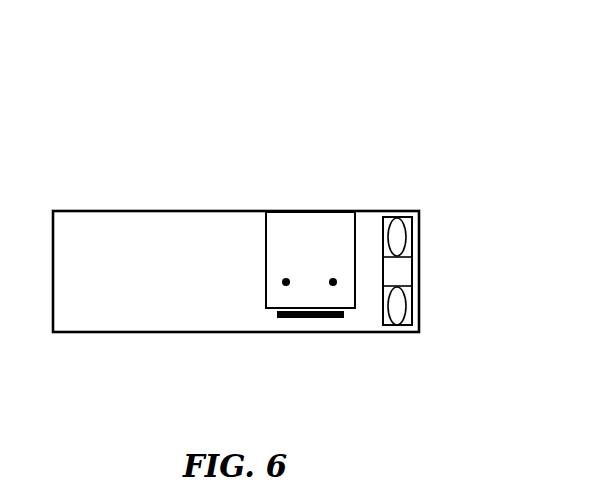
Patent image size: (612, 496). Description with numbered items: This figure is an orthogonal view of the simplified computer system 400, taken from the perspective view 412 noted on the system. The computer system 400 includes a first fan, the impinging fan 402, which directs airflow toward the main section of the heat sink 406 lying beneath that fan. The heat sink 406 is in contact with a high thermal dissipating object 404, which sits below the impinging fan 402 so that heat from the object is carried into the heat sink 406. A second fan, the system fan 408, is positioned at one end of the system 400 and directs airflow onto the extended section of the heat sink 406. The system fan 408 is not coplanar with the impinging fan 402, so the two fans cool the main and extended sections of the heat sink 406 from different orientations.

The computer system 400 is at (137, 211).
The impinging fan 402 is at (290, 234).
The high thermal dissipating object 404 is at (313, 320).
The heat sink 406 is at (327, 217).
The system fan 408 is at (405, 268).
The perspective view 412 is at (192, 283).